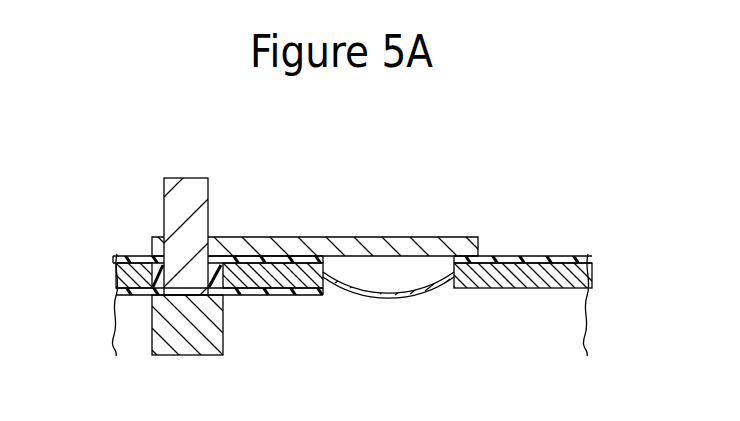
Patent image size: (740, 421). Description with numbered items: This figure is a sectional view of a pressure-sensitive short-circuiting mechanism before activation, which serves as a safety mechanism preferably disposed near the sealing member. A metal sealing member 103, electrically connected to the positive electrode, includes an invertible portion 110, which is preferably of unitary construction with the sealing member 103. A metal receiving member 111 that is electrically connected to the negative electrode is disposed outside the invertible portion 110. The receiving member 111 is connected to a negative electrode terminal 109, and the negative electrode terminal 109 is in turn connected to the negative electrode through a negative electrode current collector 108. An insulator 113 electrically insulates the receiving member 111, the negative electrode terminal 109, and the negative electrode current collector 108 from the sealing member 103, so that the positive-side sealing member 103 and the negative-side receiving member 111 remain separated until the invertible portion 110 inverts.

The sealing member 103 is at (520, 275).
The negative electrode current collector 108 is at (167, 322).
The negative electrode terminal 109 is at (187, 192).
The invertible portion 110 is at (403, 292).
The receiving member 111 is at (352, 245).
The insulator 113 is at (138, 260).